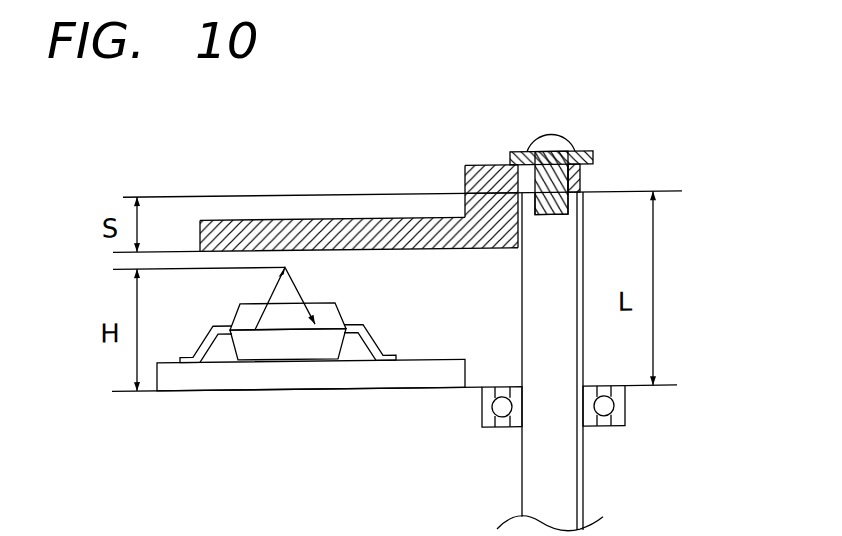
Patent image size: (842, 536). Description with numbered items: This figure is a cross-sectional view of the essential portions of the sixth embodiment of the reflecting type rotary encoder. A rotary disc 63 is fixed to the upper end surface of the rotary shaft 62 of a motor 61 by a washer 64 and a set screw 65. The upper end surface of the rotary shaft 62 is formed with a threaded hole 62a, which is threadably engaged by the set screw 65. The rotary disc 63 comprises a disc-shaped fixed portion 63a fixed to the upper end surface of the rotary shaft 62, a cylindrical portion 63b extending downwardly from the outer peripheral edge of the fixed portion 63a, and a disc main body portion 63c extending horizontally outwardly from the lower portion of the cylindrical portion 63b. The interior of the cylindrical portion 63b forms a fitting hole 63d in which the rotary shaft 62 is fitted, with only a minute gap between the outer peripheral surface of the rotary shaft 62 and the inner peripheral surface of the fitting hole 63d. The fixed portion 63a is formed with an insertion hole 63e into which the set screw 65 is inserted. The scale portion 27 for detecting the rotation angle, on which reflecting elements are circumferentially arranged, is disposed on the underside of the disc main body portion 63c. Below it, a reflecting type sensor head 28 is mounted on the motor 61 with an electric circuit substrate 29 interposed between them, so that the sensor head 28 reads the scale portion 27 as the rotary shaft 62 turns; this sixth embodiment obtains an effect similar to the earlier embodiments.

The scale portion for detecting the rotation angle 27 is at (287, 254).
The reflecting type sensor head 28 is at (235, 310).
The electric circuit substrate 29 is at (285, 380).
The motor 61 is at (519, 492).
The rotary shaft 62 is at (583, 350).
The threaded hole 62a is at (566, 206).
The rotary disc 63 is at (233, 212).
The disc-shaped fixed portion 63a is at (477, 165).
The cylindrical portion 63b is at (463, 205).
The disc main body portion 63c is at (308, 226).
The fitting hole 63d is at (518, 240).
The insertion hole 63e is at (553, 165).
The washer 64 is at (593, 154).
The set screw 65 is at (566, 141).